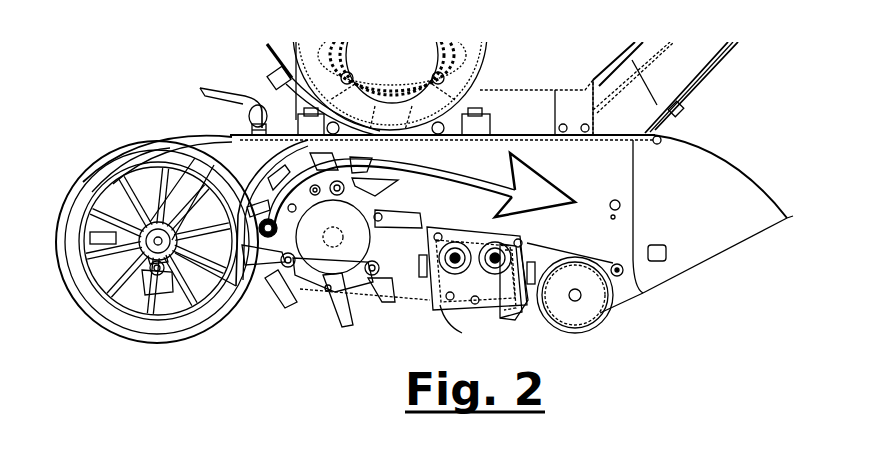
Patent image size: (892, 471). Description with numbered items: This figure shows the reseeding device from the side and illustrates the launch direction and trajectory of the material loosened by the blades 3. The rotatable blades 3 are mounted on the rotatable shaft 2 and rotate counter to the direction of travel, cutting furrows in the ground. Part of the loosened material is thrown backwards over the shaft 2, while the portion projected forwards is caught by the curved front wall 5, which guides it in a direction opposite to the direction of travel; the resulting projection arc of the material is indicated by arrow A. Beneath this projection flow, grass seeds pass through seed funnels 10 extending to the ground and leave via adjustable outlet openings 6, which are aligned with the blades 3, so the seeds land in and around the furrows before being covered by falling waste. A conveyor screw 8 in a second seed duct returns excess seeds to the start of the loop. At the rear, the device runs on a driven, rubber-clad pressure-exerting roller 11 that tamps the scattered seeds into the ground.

The rotatable shaft 2 is at (333, 240).
The rotatable blades 3 is at (275, 302).
The curved front wall 5 is at (215, 175).
The outlet openings 6 is at (503, 317).
The conveyor screw 8 is at (448, 242).
The seed funnels 10 is at (530, 222).
The pressure-exerting roller 11 is at (580, 310).
The arrow A is at (417, 195).